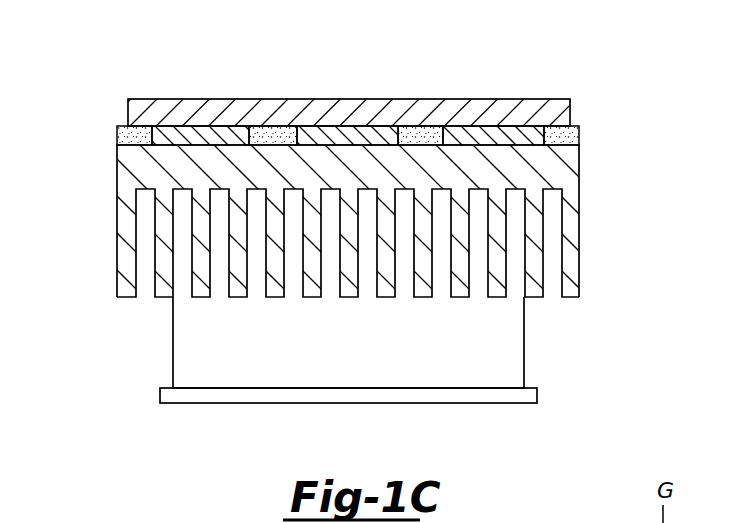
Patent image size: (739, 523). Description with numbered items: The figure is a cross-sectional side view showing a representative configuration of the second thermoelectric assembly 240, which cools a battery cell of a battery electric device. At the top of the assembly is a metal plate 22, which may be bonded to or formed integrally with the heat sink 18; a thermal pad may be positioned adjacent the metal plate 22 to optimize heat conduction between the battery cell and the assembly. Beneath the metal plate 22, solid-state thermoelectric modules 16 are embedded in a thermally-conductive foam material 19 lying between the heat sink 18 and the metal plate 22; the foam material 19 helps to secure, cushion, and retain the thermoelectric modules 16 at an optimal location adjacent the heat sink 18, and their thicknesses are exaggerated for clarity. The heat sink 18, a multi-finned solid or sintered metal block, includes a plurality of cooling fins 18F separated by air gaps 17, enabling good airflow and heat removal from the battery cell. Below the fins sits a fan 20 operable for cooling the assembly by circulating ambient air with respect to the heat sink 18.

The metal plate 22 is at (162, 107).
The solid-state thermoelectric module 16 is at (204, 135).
The thermally-conductive foam material 19 is at (122, 137).
The heat sink 18 is at (563, 163).
The cooling fins 18F is at (125, 263).
The fan 20 is at (357, 355).
The air gaps 17 is at (142, 302).
The second thermoelectric assembly 240 is at (650, 47).